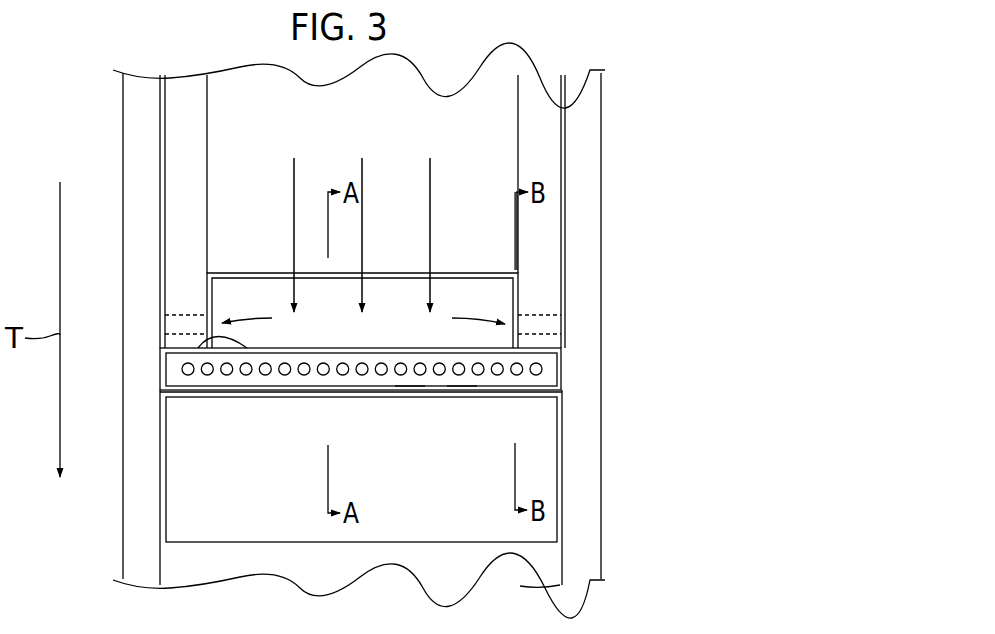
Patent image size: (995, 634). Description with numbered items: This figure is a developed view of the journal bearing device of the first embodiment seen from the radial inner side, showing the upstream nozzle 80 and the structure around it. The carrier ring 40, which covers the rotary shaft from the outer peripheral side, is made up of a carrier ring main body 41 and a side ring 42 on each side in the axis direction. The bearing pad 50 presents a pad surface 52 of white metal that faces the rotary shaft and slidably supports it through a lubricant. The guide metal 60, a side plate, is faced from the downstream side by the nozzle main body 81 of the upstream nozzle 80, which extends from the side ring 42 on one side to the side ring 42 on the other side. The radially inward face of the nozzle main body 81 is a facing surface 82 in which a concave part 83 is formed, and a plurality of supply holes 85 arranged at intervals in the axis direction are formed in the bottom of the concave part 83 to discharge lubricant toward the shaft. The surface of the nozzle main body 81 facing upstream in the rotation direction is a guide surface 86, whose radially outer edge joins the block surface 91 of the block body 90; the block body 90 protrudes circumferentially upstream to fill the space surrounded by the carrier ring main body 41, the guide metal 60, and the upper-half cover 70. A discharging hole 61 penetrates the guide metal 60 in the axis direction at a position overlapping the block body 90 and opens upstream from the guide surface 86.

The carrier ring 40 is at (605, 566).
The carrier ring main body 41 is at (538, 565).
The side ring 42 is at (595, 508).
The bearing pad 50 is at (565, 462).
The pad surface 52 is at (520, 443).
The guide metal 60 is at (175, 143).
The discharging hole 61 is at (180, 315).
The upper-half cover 70 is at (480, 140).
The upstream nozzle 80 is at (548, 369).
The nozzle main body 81 is at (513, 360).
The facing surface 82 is at (462, 386).
The concave part 83 is at (410, 385).
The supply hole 85 is at (382, 376).
The guide surface 86 is at (208, 337).
The block body 90 is at (406, 272).
The block surface 91 is at (392, 312).